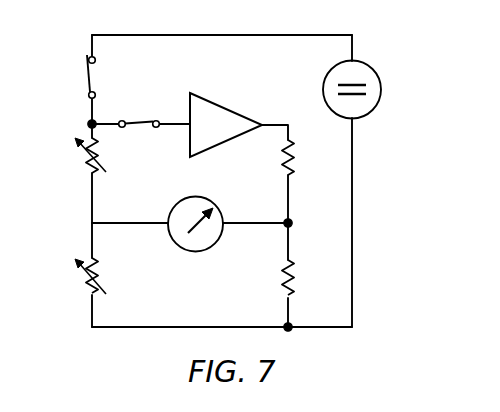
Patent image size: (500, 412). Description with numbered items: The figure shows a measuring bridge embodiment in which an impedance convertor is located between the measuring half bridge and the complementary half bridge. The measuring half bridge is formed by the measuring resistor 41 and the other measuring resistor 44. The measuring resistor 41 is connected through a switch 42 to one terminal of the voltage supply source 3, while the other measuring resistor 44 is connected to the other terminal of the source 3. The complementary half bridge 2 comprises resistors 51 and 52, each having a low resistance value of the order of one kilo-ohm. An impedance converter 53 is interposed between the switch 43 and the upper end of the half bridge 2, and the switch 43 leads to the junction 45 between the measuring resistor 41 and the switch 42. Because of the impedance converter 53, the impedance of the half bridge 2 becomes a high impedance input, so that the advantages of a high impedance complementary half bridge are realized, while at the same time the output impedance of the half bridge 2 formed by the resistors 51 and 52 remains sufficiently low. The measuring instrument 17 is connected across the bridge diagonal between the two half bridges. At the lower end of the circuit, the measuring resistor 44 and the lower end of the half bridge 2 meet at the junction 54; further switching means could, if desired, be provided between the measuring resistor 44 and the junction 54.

The voltage supply source 3 is at (358, 62).
The measuring instrument 17 is at (203, 198).
The measuring resistor 41 is at (84, 160).
The switch 42 is at (87, 78).
The switch 43 is at (133, 122).
The measuring resistor 44 is at (84, 278).
The junction 45 is at (89, 122).
The resistor 51 is at (296, 160).
The resistor 52 is at (296, 278).
The impedance converter 53 is at (210, 95).
The junction 54 is at (285, 326).
The complementary half bridge 2 is at (275, 247).